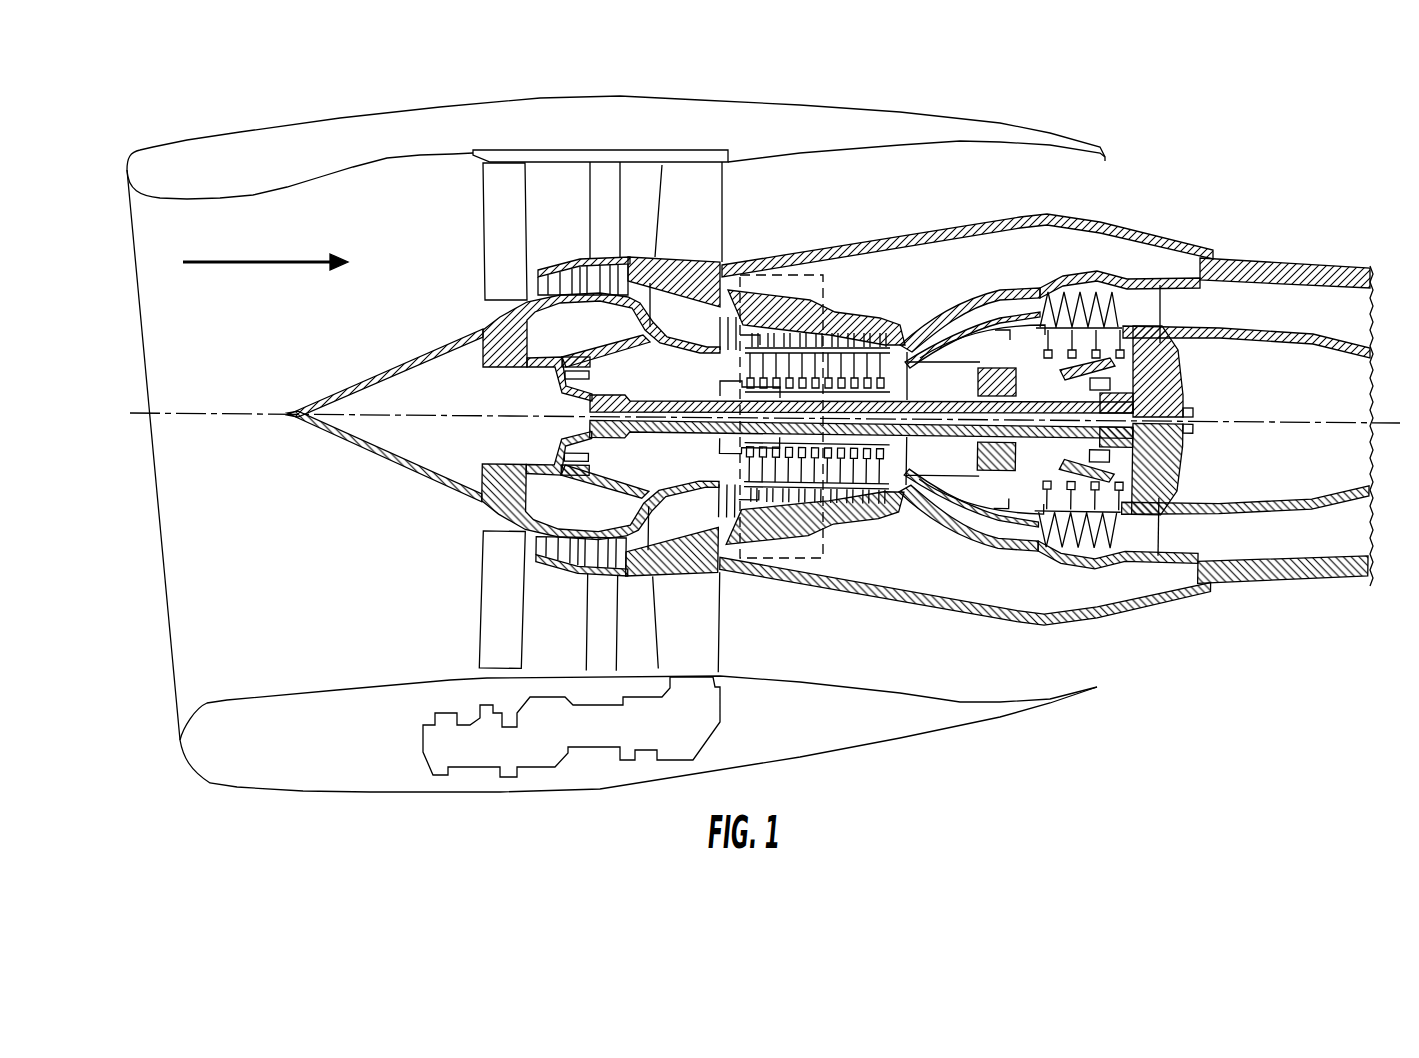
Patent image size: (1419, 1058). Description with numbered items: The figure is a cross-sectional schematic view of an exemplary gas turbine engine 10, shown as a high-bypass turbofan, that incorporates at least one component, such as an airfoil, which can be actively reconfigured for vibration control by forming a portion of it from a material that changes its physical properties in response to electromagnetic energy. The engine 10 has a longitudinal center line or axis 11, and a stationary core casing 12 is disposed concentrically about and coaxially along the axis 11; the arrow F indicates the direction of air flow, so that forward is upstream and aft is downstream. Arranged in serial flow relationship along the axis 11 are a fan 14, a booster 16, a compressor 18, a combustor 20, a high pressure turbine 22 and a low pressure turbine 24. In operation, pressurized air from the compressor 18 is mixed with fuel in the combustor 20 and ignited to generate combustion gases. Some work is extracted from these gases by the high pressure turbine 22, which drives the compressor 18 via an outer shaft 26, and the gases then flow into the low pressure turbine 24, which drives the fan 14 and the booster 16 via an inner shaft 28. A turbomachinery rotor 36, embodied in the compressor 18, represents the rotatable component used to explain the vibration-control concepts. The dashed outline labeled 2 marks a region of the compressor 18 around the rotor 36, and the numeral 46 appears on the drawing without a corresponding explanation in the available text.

The detail region 2 is at (823, 275).
The gas turbine engine 10 is at (1126, 193).
The longitudinal center line or axis 11 is at (192, 412).
The core casing 12 is at (741, 262).
The fan 14 is at (437, 516).
The booster 16 is at (568, 553).
The compressor 18 is at (784, 327).
The combustor 20 is at (952, 325).
The high pressure turbine 22 is at (1052, 282).
The low pressure turbine 24 is at (1172, 303).
The outer shaft 26 is at (940, 477).
The inner shaft 28 is at (640, 405).
The turbomachinery rotor 36 is at (737, 468).
The gear assembly 46 is at (752, 505).